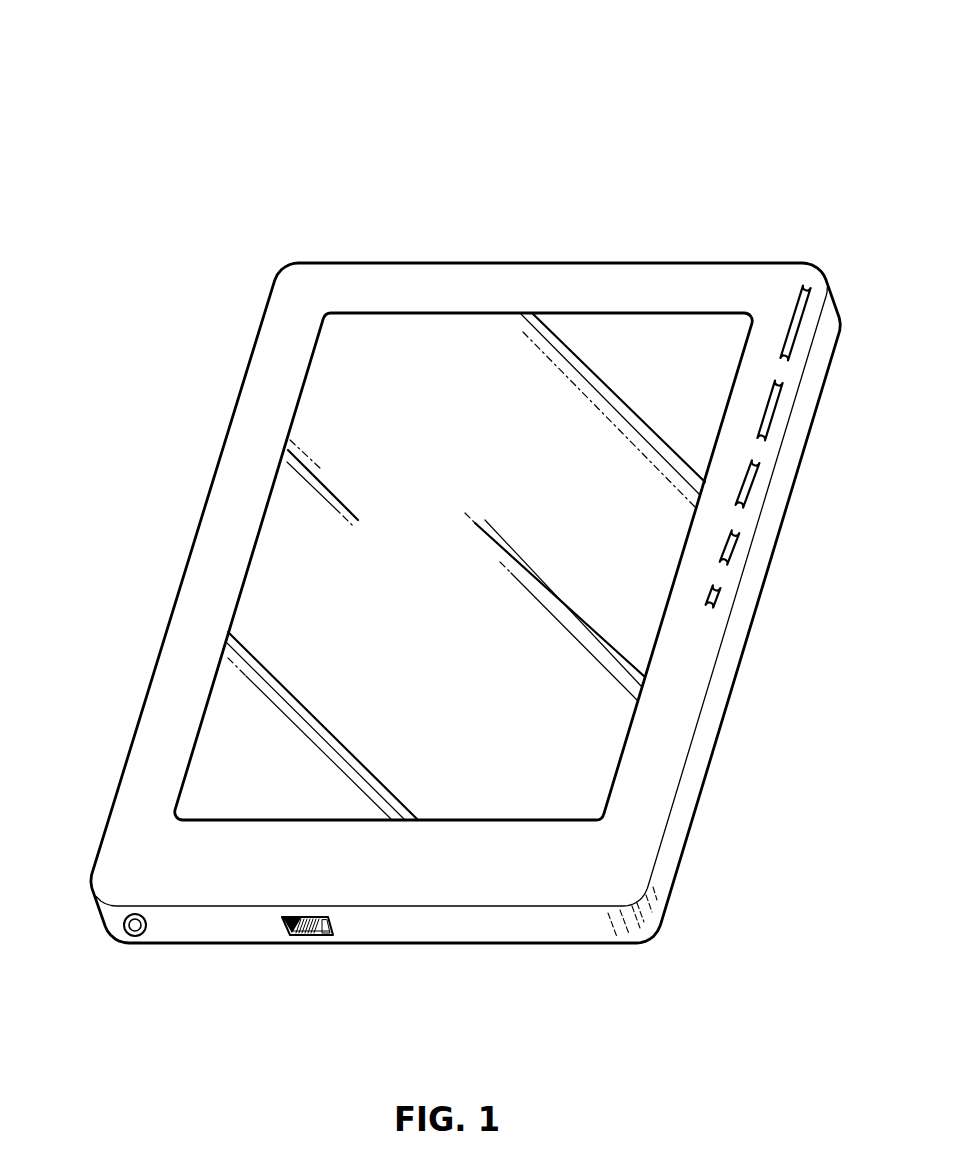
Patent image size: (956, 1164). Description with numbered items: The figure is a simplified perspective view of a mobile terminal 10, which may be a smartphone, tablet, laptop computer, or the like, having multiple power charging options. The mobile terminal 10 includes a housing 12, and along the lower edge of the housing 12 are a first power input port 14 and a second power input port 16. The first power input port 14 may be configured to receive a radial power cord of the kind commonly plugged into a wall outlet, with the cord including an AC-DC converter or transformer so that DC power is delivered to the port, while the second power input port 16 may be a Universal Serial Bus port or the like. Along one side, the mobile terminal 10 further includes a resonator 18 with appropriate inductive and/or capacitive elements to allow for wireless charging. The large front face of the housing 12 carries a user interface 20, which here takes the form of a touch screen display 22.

The mobile terminal 10 is at (639, 77).
The housing 12 is at (122, 808).
The first power input port 14 is at (133, 937).
The second power input port 16 is at (306, 936).
The resonator 18 is at (775, 407).
The user interface 20 is at (274, 391).
The touch screen display 22 is at (443, 329).